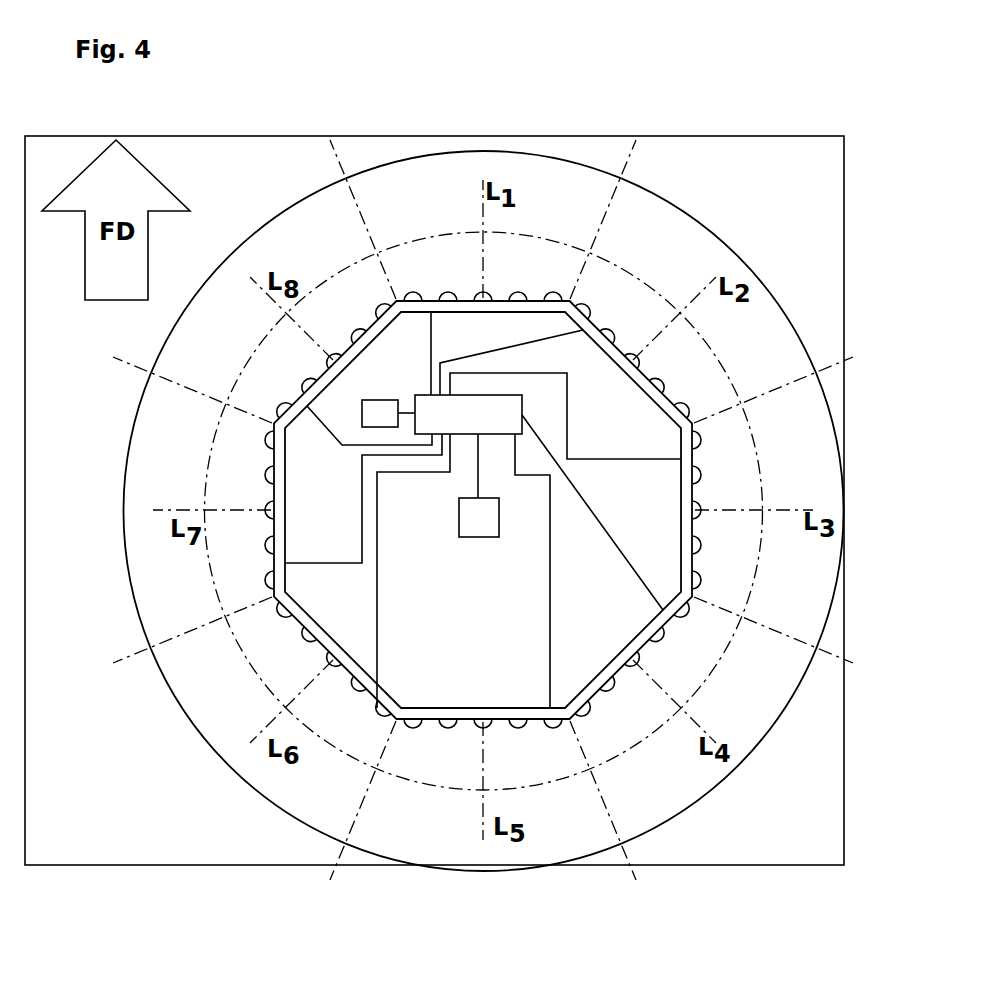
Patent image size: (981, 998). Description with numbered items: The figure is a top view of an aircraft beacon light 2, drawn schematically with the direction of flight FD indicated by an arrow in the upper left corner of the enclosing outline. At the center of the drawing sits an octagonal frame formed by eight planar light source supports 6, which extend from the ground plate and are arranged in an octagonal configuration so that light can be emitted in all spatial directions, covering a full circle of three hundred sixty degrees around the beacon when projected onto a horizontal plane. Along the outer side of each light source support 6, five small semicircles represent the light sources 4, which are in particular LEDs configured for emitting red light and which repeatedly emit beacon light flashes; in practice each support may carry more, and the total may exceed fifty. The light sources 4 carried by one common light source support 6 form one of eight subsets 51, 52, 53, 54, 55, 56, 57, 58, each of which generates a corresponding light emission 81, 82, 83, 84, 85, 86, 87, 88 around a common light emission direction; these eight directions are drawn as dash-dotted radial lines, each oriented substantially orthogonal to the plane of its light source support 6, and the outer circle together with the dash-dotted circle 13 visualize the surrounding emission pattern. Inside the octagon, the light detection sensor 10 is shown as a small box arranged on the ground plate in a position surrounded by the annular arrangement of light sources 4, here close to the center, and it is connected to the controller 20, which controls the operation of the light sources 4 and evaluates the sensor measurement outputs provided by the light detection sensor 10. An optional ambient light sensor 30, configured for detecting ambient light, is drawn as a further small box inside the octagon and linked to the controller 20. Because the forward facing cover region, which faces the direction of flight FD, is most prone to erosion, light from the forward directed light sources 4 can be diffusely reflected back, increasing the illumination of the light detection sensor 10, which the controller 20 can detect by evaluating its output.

The aircraft beacon light 2 is at (776, 214).
The light sources 4 is at (437, 276).
The light source supports 6 is at (500, 314).
The light detection sensor 10 is at (445, 517).
The detection region circle 13 is at (536, 184).
The controller 20 is at (469, 450).
The ambient light sensor 30 is at (386, 400).
The first subset of light sources 51 is at (521, 278).
The second subset of light sources 52 is at (620, 300).
The third subset of light sources 53 is at (722, 464).
The fourth subset of light sources 54 is at (626, 702).
The fifth subset of light sources 55 is at (529, 746).
The sixth subset of light sources 56 is at (360, 712).
The seventh subset of light sources 57 is at (245, 469).
The eighth subset of light sources 58 is at (348, 304).
The first light emission 81 is at (604, 148).
The second light emission 82 is at (724, 214).
The third light emission 83 is at (852, 396).
The fourth light emission 84 is at (752, 784).
The fifth light emission 85 is at (437, 886).
The sixth light emission 86 is at (184, 746).
The seventh light emission 87 is at (115, 398).
The eighth light emission 88 is at (244, 211).